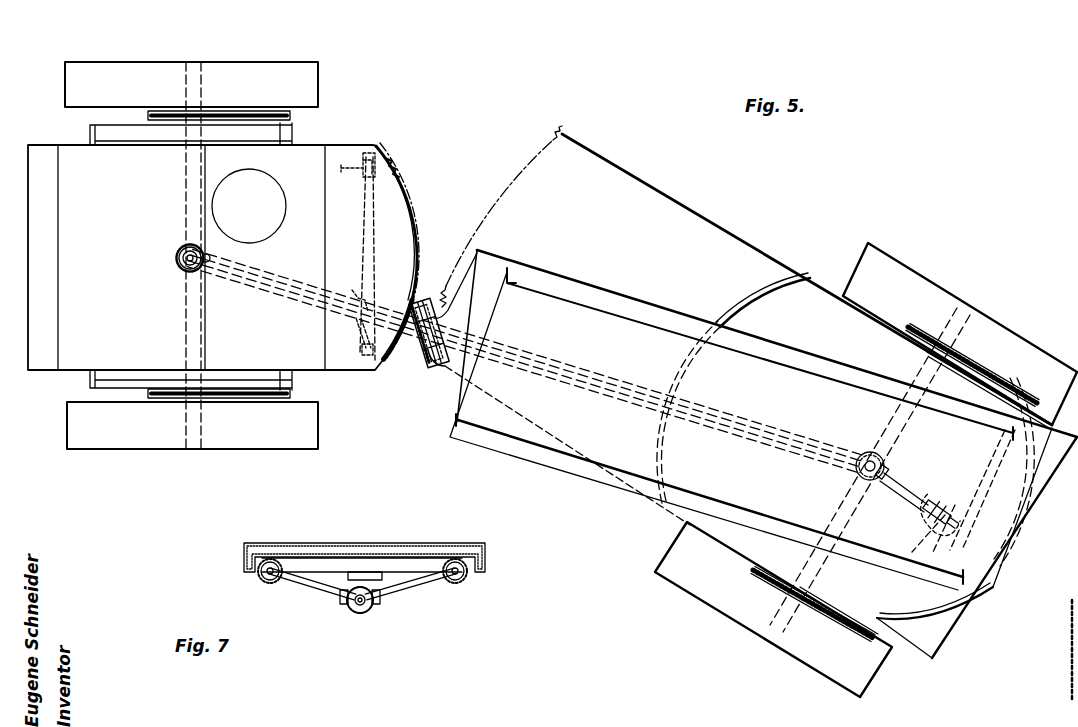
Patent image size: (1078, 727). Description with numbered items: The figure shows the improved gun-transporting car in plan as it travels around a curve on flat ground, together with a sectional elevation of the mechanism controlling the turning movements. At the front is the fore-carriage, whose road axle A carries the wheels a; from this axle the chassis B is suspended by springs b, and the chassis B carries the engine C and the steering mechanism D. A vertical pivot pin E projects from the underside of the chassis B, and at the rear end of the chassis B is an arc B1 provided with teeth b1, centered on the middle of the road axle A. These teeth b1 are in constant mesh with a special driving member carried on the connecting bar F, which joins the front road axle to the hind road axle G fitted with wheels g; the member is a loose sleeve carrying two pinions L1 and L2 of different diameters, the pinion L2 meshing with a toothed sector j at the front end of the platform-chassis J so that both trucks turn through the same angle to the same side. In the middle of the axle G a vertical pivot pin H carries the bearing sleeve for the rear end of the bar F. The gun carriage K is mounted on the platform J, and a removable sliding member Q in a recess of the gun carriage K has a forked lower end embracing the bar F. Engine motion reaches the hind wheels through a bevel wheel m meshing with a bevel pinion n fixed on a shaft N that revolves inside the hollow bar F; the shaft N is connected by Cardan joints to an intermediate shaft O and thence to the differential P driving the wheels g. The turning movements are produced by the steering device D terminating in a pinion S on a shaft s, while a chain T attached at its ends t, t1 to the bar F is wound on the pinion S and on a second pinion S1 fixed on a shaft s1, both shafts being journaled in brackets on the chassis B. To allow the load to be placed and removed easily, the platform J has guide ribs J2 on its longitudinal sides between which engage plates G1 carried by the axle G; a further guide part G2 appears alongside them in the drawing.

In FIG. 5, the wheels a is at (117, 76).
In FIG. 5, the engine C is at (77, 168).
In FIG. 5, the road axle A is at (185, 312).
In FIG. 5, the springs b is at (120, 138).
In FIG. 5, the chassis B is at (310, 162).
In FIG. 7, the chassis B is at (386, 557).
In FIG. 5, the arc B1 is at (400, 207).
In FIG. 5, the teeth b1 is at (388, 168).
In FIG. 5, the steering mechanism D is at (272, 226).
In FIG. 5, the vertical pivot pin E is at (180, 260).
In FIG. 5, the bevel toothed wheel m is at (180, 253).
In FIG. 5, the bevel pinion n is at (210, 258).
In FIG. 5, the connecting bar F is at (268, 291).
In FIG. 7, the connecting bar F is at (358, 615).
In FIG. 5, the shaft N is at (604, 390).
In FIG. 7, the shaft N is at (364, 614).
In FIG. 5, the chain T is at (369, 247).
In FIG. 7, the chain T is at (338, 560).
In FIG. 5, the shaft s is at (341, 170).
In FIG. 7, the shaft s is at (457, 578).
In FIG. 5, the pinion S is at (367, 172).
In FIG. 7, the pinion S is at (470, 577).
In FIG. 5, the chain end t is at (357, 293).
In FIG. 7, the chain end t is at (380, 604).
In FIG. 5, the chain end t1 is at (357, 320).
In FIG. 7, the chain end t1 is at (347, 603).
In FIG. 5, the second pinion S1 is at (360, 352).
In FIG. 7, the second pinion S1 is at (260, 578).
In FIG. 7, the shaft s1 is at (272, 580).
In FIG. 5, the pinion L1 is at (410, 350).
In FIG. 5, the pinion L2 is at (421, 360).
In FIG. 5, the sliding member Q is at (422, 300).
In FIG. 5, the toothed sector j is at (552, 150).
In FIG. 5, the chassis J is at (698, 228).
In FIG. 5, the gun carriage K is at (570, 285).
In FIG. 5, the wheels g is at (895, 268).
In FIG. 5, the guide ribs J2 is at (930, 343).
In FIG. 5, the plates G1 is at (935, 343).
In FIG. 5, the rod G2 is at (797, 587).
In FIG. 5, the road axle G is at (852, 482).
In FIG. 5, the vertical pivot pin H is at (884, 466).
In FIG. 5, the intermediate shaft O is at (898, 488).
In FIG. 5, the differential P is at (935, 503).